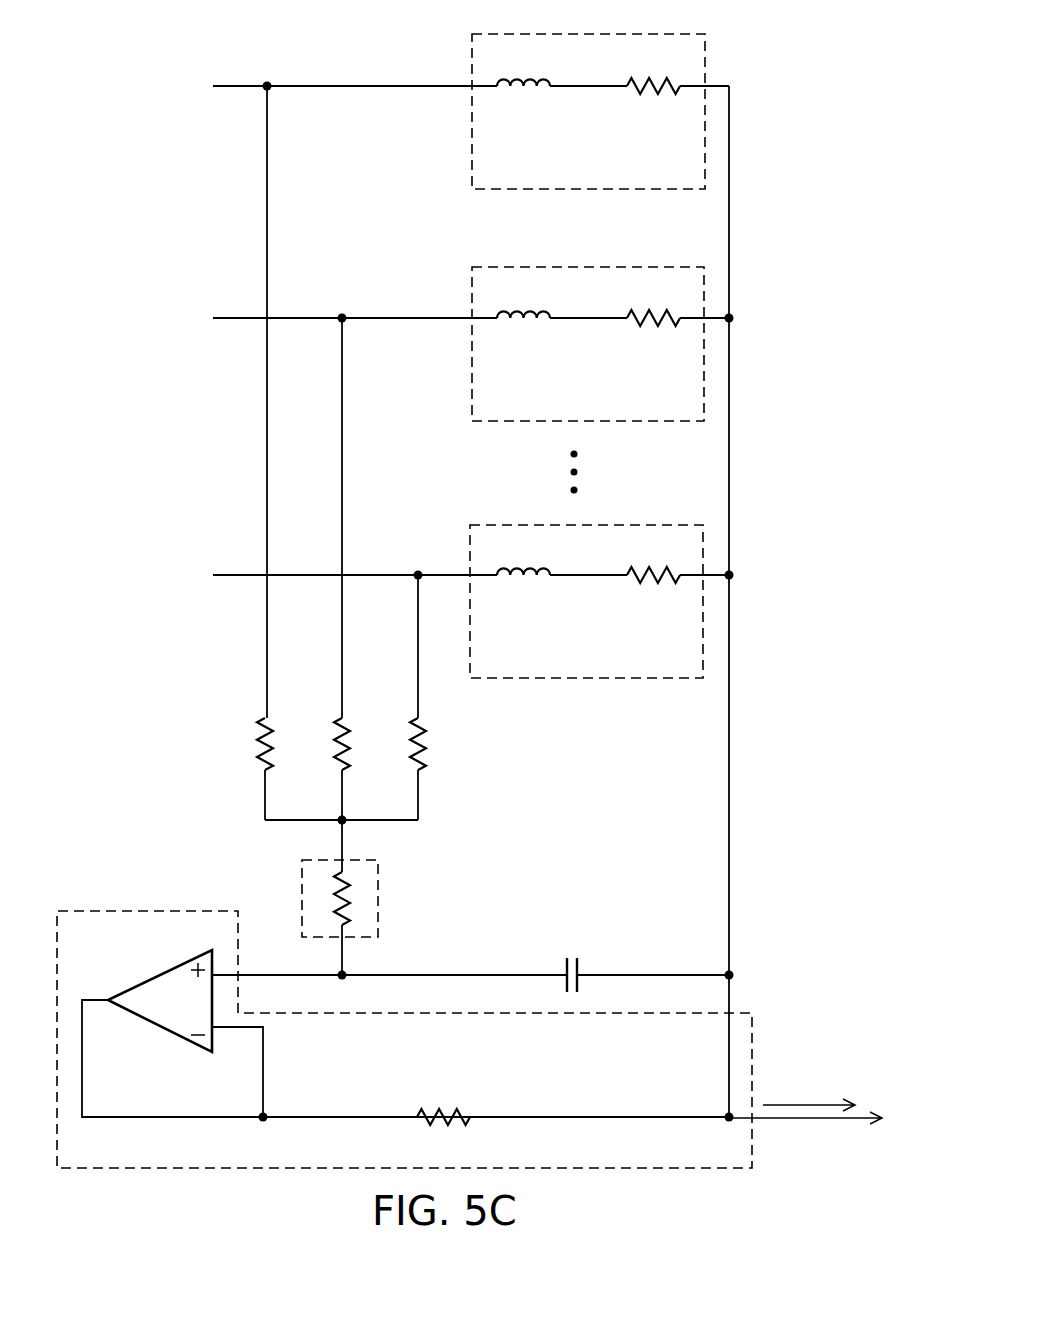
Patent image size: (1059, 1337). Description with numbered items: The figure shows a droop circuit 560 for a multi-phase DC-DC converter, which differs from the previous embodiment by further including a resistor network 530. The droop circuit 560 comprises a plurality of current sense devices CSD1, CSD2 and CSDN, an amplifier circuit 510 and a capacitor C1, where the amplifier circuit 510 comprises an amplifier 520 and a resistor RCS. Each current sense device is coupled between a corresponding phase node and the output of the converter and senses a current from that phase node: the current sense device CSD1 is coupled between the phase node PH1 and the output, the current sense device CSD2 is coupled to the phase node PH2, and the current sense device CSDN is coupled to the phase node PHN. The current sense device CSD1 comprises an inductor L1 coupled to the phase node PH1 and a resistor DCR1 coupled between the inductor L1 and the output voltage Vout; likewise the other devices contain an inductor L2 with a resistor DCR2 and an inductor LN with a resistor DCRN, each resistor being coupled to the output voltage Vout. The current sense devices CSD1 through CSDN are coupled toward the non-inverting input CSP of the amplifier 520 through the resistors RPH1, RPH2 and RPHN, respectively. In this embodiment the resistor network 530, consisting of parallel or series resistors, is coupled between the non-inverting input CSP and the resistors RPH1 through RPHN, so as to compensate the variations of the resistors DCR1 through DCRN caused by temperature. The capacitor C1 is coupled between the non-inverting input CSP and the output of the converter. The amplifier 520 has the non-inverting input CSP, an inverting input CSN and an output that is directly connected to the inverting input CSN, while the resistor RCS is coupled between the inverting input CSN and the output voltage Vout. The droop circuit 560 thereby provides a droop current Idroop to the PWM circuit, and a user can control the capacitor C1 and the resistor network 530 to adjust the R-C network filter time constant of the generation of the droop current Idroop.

The droop circuit 560 is at (838, 34).
The amplifier circuit 510 is at (147, 910).
The amplifier 520 is at (160, 972).
The resistor network 530 is at (380, 898).
The current sense device CSD1 is at (604, 34).
The current sense device CSD2 is at (604, 267).
The current sense device CSDN is at (602, 525).
The inductor L1 is at (503, 82).
The inductor L2 is at (503, 314).
The inductor LN is at (503, 571).
The resistor DCR1 is at (668, 97).
The resistor DCR2 is at (668, 329).
The resistor DCRN is at (668, 586).
The phase node PH1 is at (326, 397).
The phase node PH2 is at (326, 513).
The phase node PHN is at (326, 641).
The resistor RPH1 is at (276, 748).
The resistor RPH2 is at (353, 748).
The resistor RPHN is at (429, 748).
The capacitor C1 is at (578, 957).
The non-inverting input CSP is at (345, 979).
The inverting input CSN is at (265, 1121).
The resistor RCS is at (432, 1108).
The output voltage Vout is at (755, 604).
The droop current Idroop is at (805, 1127).